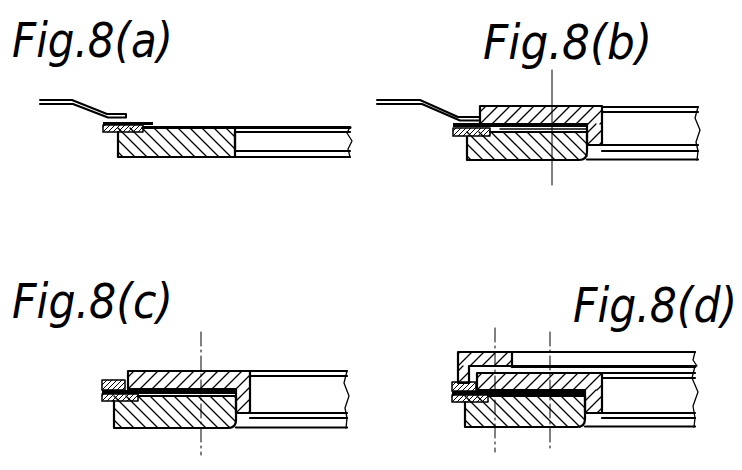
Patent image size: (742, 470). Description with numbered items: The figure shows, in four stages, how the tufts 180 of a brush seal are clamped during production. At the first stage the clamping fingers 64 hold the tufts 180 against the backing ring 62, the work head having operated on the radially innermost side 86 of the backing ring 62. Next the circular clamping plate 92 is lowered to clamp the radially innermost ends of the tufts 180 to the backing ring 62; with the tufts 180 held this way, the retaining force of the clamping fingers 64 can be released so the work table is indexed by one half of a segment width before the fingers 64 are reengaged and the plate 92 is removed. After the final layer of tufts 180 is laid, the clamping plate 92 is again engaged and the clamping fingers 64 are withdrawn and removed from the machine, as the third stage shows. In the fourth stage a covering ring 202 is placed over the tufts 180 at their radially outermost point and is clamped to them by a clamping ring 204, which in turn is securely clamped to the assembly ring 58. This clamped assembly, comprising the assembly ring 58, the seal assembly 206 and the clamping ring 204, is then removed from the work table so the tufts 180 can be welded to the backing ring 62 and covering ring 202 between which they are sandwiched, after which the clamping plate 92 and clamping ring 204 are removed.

In FIG. 8A, the assembly ring 58 is at (205, 151).
In FIG. 8B, the assembly ring 58 is at (572, 160).
In FIG. 8A, the backing ring 62 is at (108, 131).
In FIG. 8B, the backing ring 62 is at (458, 137).
In FIG. 8A, the clamping fingers 64 is at (72, 99).
In FIG. 8B, the clamping fingers 64 is at (420, 100).
In FIG. 8A, the radially innermost side 86 is at (157, 125).
In FIG. 8B, the clamping plate 92 is at (587, 110).
In FIG. 8C, the clamping plate 92 is at (237, 377).
In FIG. 8D, the clamping plate 92 is at (587, 392).
In FIG. 8A, the tufts 180 is at (153, 120).
In FIG. 8B, the tufts 180 is at (500, 161).
In FIG. 8C, the covering ring 202 is at (113, 378).
In FIG. 8D, the clamping ring 204 is at (503, 357).
In FIG. 8D, the seal assembly 206 is at (450, 394).